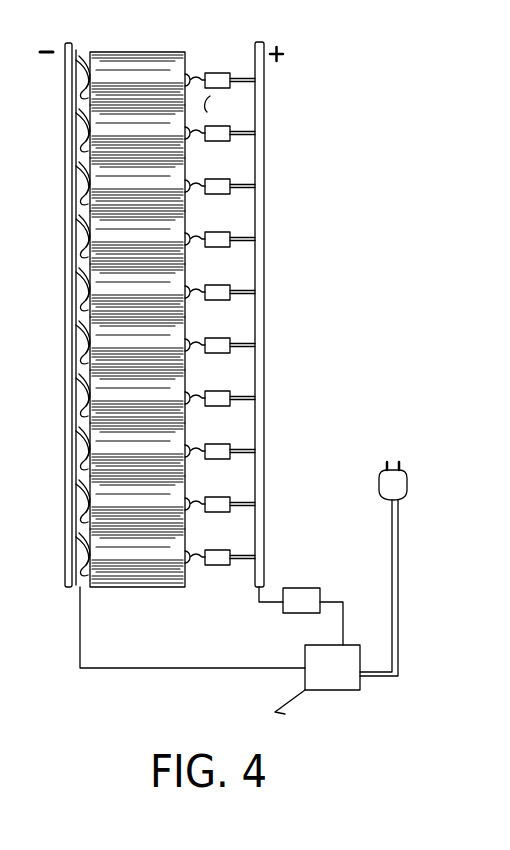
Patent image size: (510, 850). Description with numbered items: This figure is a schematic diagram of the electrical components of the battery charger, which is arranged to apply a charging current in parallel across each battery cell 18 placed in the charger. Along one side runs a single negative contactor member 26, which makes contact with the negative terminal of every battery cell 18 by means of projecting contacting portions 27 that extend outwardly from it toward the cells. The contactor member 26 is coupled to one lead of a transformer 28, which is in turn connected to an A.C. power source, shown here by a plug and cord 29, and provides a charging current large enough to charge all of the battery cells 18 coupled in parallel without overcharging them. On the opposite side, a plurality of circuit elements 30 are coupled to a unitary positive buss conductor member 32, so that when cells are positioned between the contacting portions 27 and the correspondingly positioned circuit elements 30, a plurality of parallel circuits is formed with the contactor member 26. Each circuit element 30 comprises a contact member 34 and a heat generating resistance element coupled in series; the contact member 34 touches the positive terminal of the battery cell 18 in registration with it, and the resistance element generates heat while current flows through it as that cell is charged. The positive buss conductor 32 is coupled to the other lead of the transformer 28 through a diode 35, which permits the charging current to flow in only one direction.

The battery cell 18 is at (134, 122).
The negative contactor member 26 is at (66, 308).
The projecting contacting portions 27 is at (80, 70).
The transformer 28 is at (344, 683).
The plug and cord 29 is at (392, 508).
The circuit element 30 is at (240, 62).
The positive buss conductor member 32 is at (266, 84).
The contact member 34 is at (198, 345).
The diode 35 is at (322, 570).